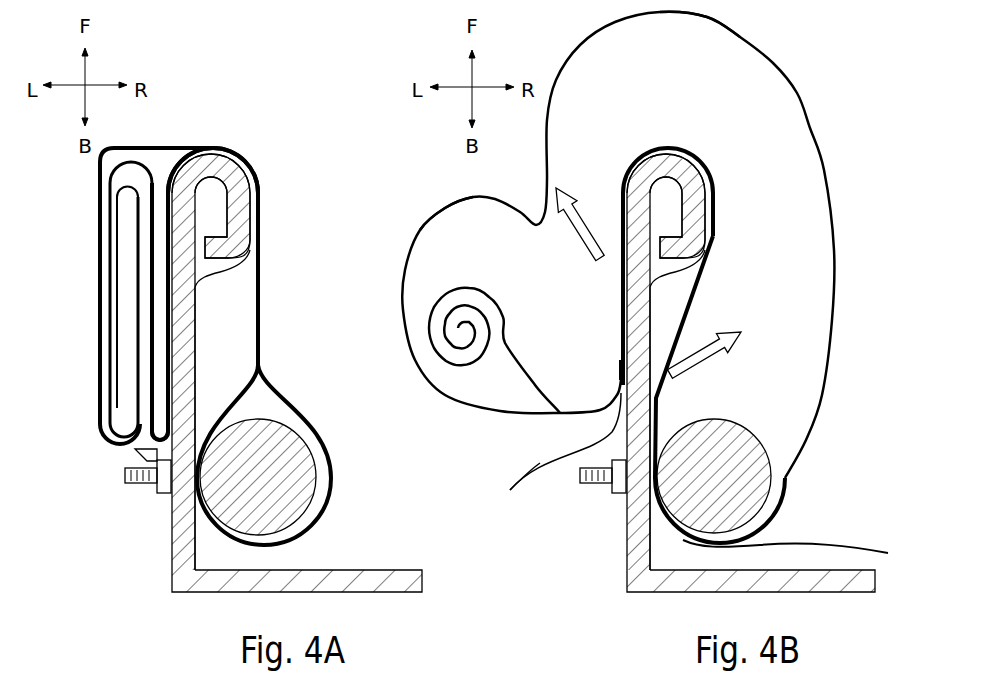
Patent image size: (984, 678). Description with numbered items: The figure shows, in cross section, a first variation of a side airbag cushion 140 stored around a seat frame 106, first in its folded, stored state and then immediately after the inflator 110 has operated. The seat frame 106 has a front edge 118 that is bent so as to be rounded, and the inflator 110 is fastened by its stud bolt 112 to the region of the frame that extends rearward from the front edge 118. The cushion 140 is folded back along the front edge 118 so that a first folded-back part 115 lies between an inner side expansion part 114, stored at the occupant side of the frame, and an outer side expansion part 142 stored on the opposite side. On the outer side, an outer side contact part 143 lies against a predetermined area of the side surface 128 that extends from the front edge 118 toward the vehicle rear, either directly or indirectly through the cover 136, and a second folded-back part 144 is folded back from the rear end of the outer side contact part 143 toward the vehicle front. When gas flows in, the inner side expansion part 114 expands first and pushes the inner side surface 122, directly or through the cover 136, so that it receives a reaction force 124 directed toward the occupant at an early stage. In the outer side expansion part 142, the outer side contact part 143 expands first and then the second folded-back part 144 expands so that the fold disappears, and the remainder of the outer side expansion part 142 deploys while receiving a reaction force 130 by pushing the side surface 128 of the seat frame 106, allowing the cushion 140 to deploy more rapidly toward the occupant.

In FIG. 4A, the seat frame 106 is at (204, 594).
In FIG. 4B, the seat frame 106 is at (657, 594).
In FIG. 4A, the inflator 110 is at (332, 480).
In FIG. 4B, the inflator 110 is at (787, 477).
In FIG. 4A, the stud bolt 112 is at (132, 497).
In FIG. 4B, the stud bolt 112 is at (598, 497).
In FIG. 4A, the inner side expansion part 114 is at (263, 290).
In FIG. 4B, the inner side expansion part 114 is at (835, 242).
In FIG. 4A, the first folded-back part 115 is at (200, 147).
In FIG. 4B, the first folded-back part 115 is at (697, 13).
In FIG. 4A, the front edge 118 is at (237, 166).
In FIG. 4B, the front edge 118 is at (667, 151).
In FIG. 4A, the side surface 122 is at (197, 352).
In FIG. 4B, the side surface 122 is at (657, 400).
In FIG. 4B, the reaction force 124 is at (730, 320).
In FIG. 4A, the side surface 128 is at (160, 413).
In FIG. 4B, the side surface 128 is at (617, 352).
In FIG. 4B, the reaction force 130 is at (565, 190).
In FIG. 4A, the cover 136 is at (100, 352).
In FIG. 4B, the cover 136 is at (522, 492).
In FIG. 4A, the cushion 140 is at (318, 424).
In FIG. 4B, the cushion 140 is at (800, 98).
In FIG. 4A, the outer side expansion part 142 is at (100, 304).
In FIG. 4B, the outer side expansion part 142 is at (457, 198).
In FIG. 4A, the outer side contact part 143 is at (160, 237).
In FIG. 4B, the outer side contact part 143 is at (545, 181).
In FIG. 4A, the second folded-back part 144 is at (137, 462).
In FIG. 4B, the second folded-back part 144 is at (580, 420).